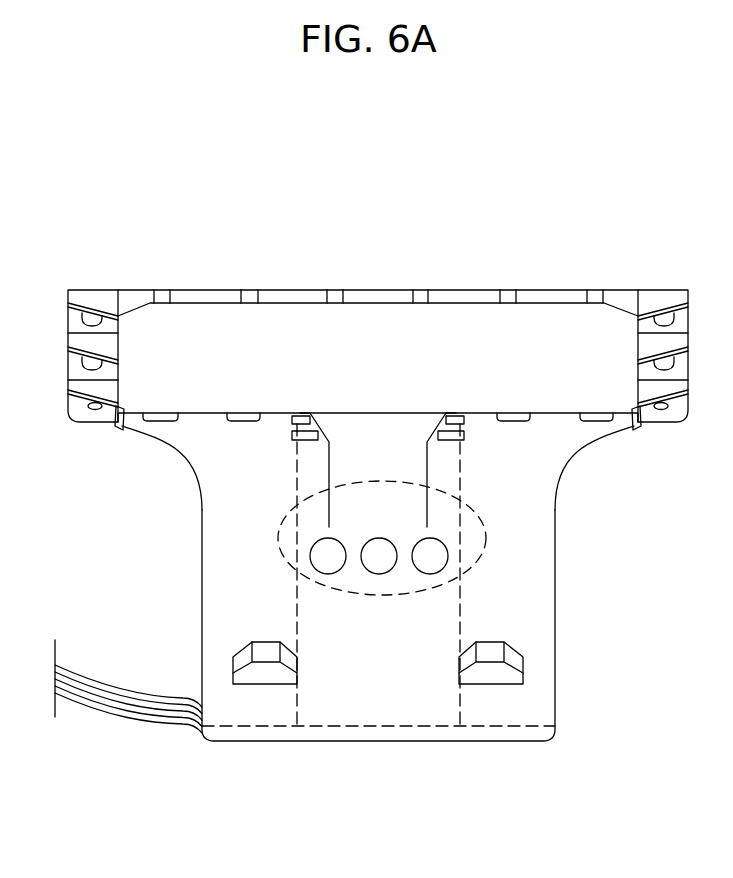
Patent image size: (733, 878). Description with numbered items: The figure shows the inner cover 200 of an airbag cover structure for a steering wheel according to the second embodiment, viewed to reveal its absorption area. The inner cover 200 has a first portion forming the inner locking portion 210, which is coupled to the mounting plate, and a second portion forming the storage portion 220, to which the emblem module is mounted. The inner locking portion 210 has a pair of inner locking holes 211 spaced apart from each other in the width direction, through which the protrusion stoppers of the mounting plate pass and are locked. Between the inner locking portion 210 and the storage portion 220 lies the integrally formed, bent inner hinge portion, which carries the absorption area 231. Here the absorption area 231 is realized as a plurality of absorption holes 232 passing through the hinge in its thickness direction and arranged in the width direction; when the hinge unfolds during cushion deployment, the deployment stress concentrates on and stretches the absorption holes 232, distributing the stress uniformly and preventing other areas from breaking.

The inner cover 200 is at (524, 265).
The storage portion 220 is at (376, 323).
The inner locking portion 210 is at (373, 713).
The inner locking holes 211 is at (268, 672).
The absorption area 231 is at (282, 555).
The absorption hole 232 is at (372, 560).